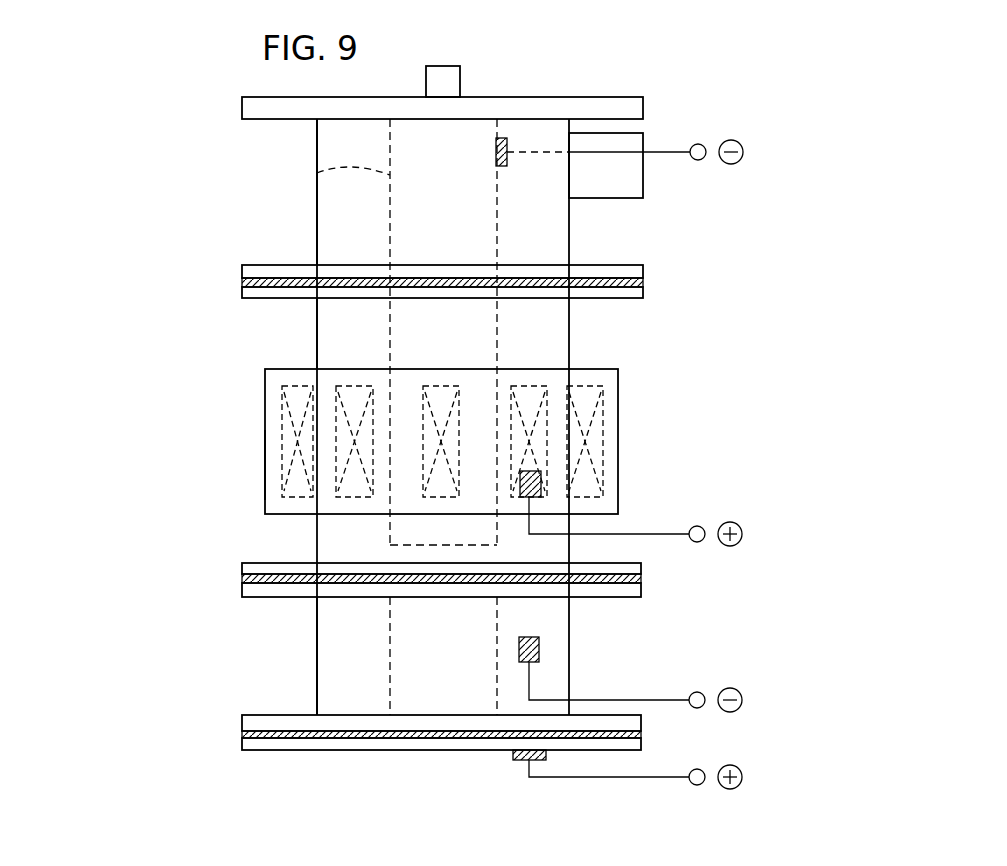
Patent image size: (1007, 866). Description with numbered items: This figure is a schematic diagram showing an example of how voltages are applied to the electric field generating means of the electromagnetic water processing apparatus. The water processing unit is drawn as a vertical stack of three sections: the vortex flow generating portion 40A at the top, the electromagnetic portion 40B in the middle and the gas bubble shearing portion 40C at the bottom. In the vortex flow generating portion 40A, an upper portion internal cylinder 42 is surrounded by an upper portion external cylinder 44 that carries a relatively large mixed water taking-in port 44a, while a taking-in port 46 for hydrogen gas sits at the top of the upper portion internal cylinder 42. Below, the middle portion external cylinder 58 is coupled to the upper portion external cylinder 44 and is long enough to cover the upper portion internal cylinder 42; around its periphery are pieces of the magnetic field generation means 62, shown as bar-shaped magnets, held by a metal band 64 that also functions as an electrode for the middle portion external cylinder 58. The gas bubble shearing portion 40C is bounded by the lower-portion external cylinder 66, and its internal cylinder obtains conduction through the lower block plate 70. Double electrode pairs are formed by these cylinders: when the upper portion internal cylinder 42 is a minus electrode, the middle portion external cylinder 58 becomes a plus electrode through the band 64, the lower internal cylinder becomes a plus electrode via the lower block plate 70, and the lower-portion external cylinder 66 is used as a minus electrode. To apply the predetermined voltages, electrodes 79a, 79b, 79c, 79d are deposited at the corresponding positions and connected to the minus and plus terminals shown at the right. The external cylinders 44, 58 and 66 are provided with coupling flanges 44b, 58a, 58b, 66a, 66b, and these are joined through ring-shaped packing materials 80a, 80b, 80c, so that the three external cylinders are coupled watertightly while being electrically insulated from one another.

The vortex flow generating portion 40A is at (217, 208).
The electromagnetic portion 40B is at (212, 430).
The gas bubble shearing portion 40C is at (177, 657).
The upper portion internal cylinder 42 is at (317, 173).
The upper portion external cylinder 44 is at (317, 218).
The mixed water taking-in port 44a is at (636, 178).
The coupling flange 44b is at (242, 268).
The taking-in port for hydrogen gas 46 is at (453, 80).
The middle portion external cylinder 58 is at (317, 335).
The coupling flange 58a is at (624, 298).
The coupling flange 58b is at (250, 563).
The magnetic field generation means 62 is at (592, 385).
The metal band 64 is at (618, 453).
The lower-portion external cylinder 66 is at (317, 660).
The coupling flange 66a is at (257, 597).
The coupling flange 66b is at (242, 722).
The lower block plate 70 is at (278, 750).
The electrode 79a is at (507, 142).
The electrode 79b is at (541, 487).
The electrode 79c is at (539, 645).
The electrode 79d is at (510, 760).
The ring-shaped packing material 80a is at (443, 278).
The ring-shaped packing material 80b is at (431, 583).
The ring-shaped packing material 80c is at (403, 738).